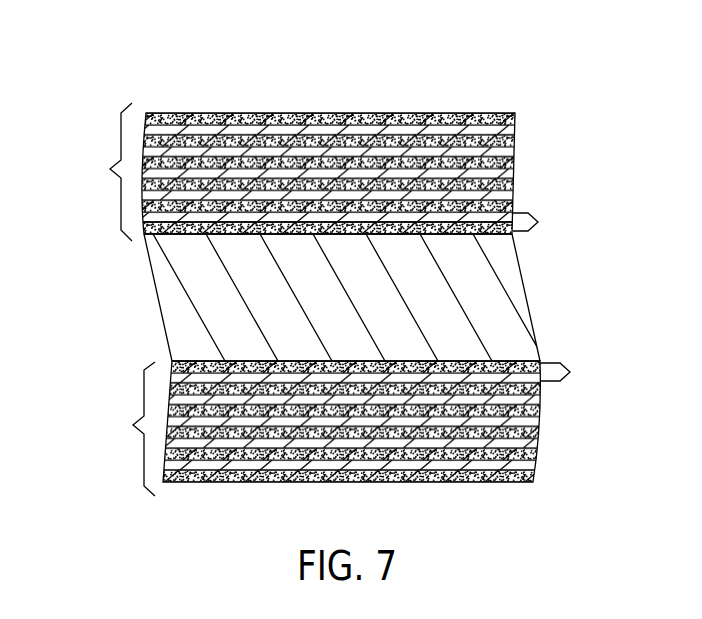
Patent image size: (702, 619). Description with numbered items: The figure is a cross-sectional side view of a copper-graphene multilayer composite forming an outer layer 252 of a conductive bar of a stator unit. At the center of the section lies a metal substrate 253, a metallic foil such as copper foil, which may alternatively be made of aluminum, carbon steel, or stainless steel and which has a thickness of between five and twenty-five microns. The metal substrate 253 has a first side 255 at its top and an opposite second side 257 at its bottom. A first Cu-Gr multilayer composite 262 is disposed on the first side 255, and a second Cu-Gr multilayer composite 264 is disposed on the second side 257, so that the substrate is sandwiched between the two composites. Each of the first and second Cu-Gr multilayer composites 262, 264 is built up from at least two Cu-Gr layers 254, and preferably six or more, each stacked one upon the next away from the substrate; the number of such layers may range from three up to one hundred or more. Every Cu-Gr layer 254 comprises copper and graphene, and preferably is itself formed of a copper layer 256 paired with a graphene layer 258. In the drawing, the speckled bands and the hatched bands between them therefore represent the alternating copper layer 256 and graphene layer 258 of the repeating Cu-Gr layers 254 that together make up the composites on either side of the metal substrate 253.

The outer layer 252 is at (344, 259).
The metal substrate 253 is at (188, 298).
The Cu-Gr layer 254 is at (559, 296).
The first side 255 is at (167, 236).
The copper layer 256 is at (492, 216).
The second side 257 is at (184, 361).
The graphene layer 258 is at (470, 235).
The first Cu-Gr multilayer composite 262 is at (338, 188).
The second Cu-Gr multilayer composite 264 is at (317, 428).